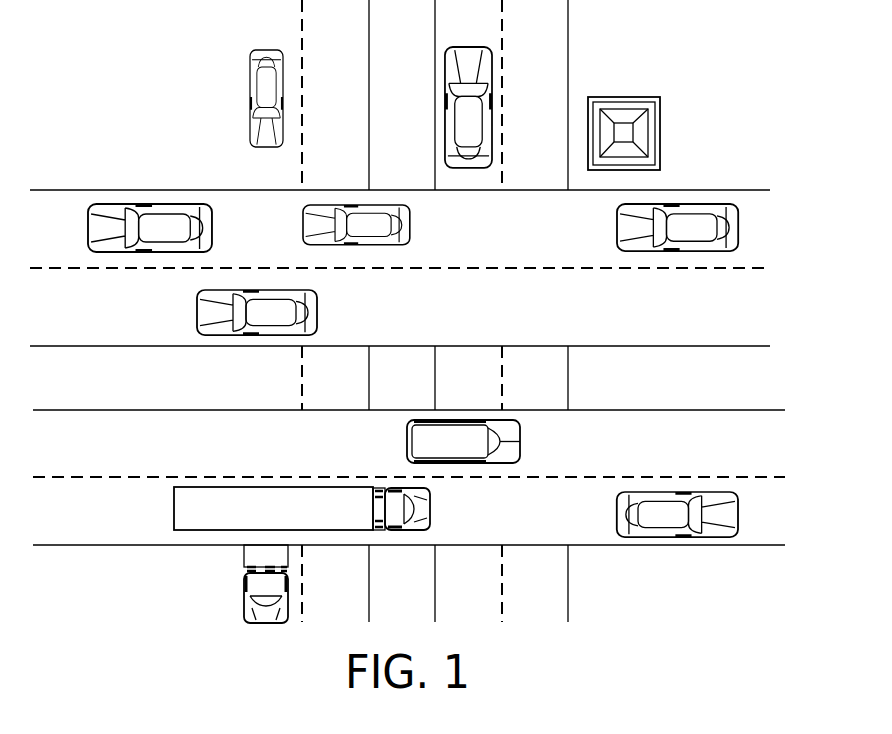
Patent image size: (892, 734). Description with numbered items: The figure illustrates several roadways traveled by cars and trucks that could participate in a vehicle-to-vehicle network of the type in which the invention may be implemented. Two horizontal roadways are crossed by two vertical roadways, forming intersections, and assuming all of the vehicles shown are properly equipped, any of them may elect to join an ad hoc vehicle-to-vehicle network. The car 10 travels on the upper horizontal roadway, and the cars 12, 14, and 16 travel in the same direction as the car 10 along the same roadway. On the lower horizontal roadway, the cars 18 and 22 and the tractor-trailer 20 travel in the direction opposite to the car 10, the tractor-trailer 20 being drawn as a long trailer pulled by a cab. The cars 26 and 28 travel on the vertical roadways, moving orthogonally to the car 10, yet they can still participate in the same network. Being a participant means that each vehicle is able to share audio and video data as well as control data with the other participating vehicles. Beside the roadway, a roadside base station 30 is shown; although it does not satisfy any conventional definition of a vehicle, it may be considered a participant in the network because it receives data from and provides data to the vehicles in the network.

The car 10 is at (193, 336).
The car 12 is at (162, 206).
The car 14 is at (360, 203).
The car 16 is at (683, 200).
The car 18 is at (455, 418).
The tractor-trailer 20 is at (203, 533).
The car 22 is at (700, 533).
The car 26 is at (250, 113).
The car 28 is at (446, 79).
The base station 30 is at (660, 132).